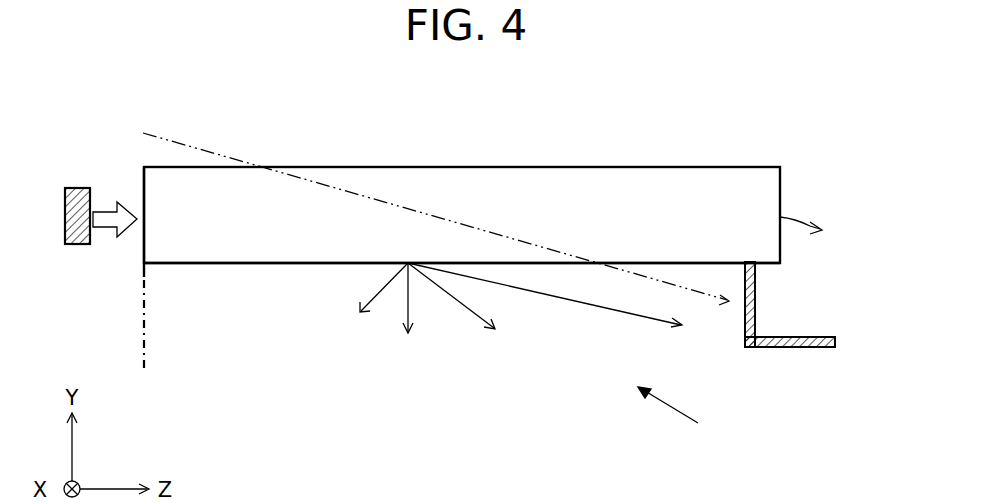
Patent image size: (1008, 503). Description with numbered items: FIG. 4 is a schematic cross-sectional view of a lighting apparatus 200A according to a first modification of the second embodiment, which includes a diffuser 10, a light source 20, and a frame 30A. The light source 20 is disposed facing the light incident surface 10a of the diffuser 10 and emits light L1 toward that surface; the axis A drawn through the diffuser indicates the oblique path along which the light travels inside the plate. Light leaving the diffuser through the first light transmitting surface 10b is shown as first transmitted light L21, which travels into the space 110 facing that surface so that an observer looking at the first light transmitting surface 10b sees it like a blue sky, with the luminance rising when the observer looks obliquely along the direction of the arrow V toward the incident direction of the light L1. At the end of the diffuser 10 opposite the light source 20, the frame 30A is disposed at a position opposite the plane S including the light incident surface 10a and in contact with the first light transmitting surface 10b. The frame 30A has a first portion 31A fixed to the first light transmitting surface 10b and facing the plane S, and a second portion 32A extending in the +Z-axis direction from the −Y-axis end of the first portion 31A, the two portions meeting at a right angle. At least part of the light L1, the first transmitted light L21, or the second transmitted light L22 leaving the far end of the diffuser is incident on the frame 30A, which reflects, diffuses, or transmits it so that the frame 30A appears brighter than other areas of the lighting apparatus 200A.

The diffuser 10 is at (377, 178).
The light incident surface 10a is at (142, 184).
The first light transmitting surface 10b is at (267, 264).
The optical axis A is at (295, 178).
The light source 20 is at (74, 188).
The light L1 is at (112, 229).
The plane S is at (145, 357).
The first transmitted light L21 is at (380, 300).
The second transmitted light L22 is at (808, 231).
The frame 30A is at (758, 333).
The first portion 31A is at (745, 330).
The second portion 32A is at (783, 348).
The lighting apparatus 200A is at (525, 131).
The space 110 is at (412, 416).
The arrow V is at (673, 412).